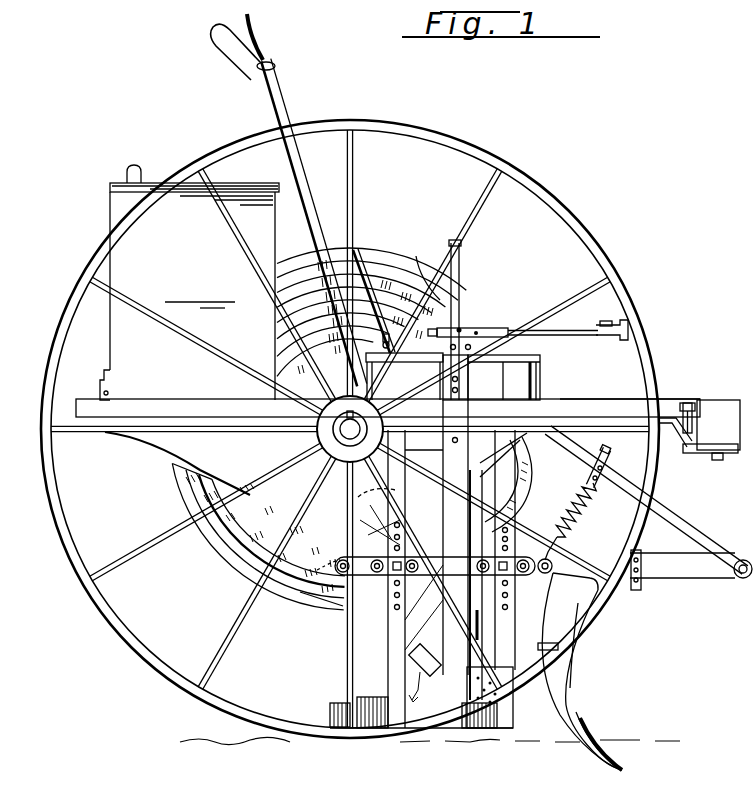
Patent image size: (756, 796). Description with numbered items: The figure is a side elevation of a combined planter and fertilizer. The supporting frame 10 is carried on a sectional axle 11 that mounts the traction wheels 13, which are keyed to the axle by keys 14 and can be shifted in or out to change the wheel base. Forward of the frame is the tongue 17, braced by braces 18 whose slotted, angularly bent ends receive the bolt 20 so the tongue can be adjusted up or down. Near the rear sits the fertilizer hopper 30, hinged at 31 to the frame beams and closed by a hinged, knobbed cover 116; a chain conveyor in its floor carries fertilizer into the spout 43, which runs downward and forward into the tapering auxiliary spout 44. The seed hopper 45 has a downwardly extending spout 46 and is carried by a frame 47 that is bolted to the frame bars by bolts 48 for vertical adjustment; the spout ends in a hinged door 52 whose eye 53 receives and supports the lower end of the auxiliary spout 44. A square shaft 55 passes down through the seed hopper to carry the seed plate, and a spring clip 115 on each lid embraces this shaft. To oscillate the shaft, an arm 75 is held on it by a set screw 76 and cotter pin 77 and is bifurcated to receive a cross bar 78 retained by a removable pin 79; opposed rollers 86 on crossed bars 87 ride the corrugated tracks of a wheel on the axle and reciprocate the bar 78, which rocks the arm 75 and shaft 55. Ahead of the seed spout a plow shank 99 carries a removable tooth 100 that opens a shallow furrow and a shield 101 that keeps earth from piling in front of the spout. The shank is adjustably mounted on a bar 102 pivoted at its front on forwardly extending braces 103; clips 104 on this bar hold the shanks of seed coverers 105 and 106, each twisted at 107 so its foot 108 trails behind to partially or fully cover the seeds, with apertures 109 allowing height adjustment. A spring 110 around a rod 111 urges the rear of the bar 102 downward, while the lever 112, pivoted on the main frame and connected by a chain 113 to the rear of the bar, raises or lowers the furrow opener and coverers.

The supporting frame 10 is at (140, 420).
The sectional axle 11 is at (338, 435).
The traction wheels 13 is at (60, 314).
The keys 14 is at (310, 416).
The tongue 17 is at (728, 400).
The braces 18 is at (611, 399).
The bolt 20 is at (688, 402).
The fertilizer hopper 30 is at (143, 248).
The hinge 31 is at (96, 394).
The spout 43 is at (290, 535).
The auxiliary spout 44 is at (384, 628).
The seed hopper 45 is at (541, 378).
The spout 46 is at (485, 493).
The frame 47 is at (500, 597).
The bolts 48 is at (458, 379).
The door 52 is at (486, 632).
The eye 53 is at (426, 673).
The shaft 55 is at (460, 254).
The arm 75 is at (510, 328).
The set screw 76 is at (416, 256).
The cotter pin 77 is at (462, 327).
The cross bar 78 is at (598, 338).
The removable pin 79 is at (602, 322).
The rollers 86 is at (283, 343).
The crossed bars 87 is at (385, 258).
The plow shank 99 is at (585, 600).
The removable tooth 100 is at (600, 735).
The shield 101 is at (578, 672).
The bar 102 is at (675, 576).
The braces 103 is at (680, 537).
The clips 104 is at (348, 616).
The seed coverer 105 is at (468, 672).
The seed coverer 106 is at (398, 662).
The twist 107 is at (374, 742).
The foot 108 is at (328, 712).
The apertures 109 is at (366, 535).
The spring 110 is at (578, 515).
The rod 111 is at (606, 456).
The lever 112 is at (270, 99).
The chain 113 is at (375, 490).
The spring clip 115 is at (373, 376).
The cover 116 is at (152, 182).